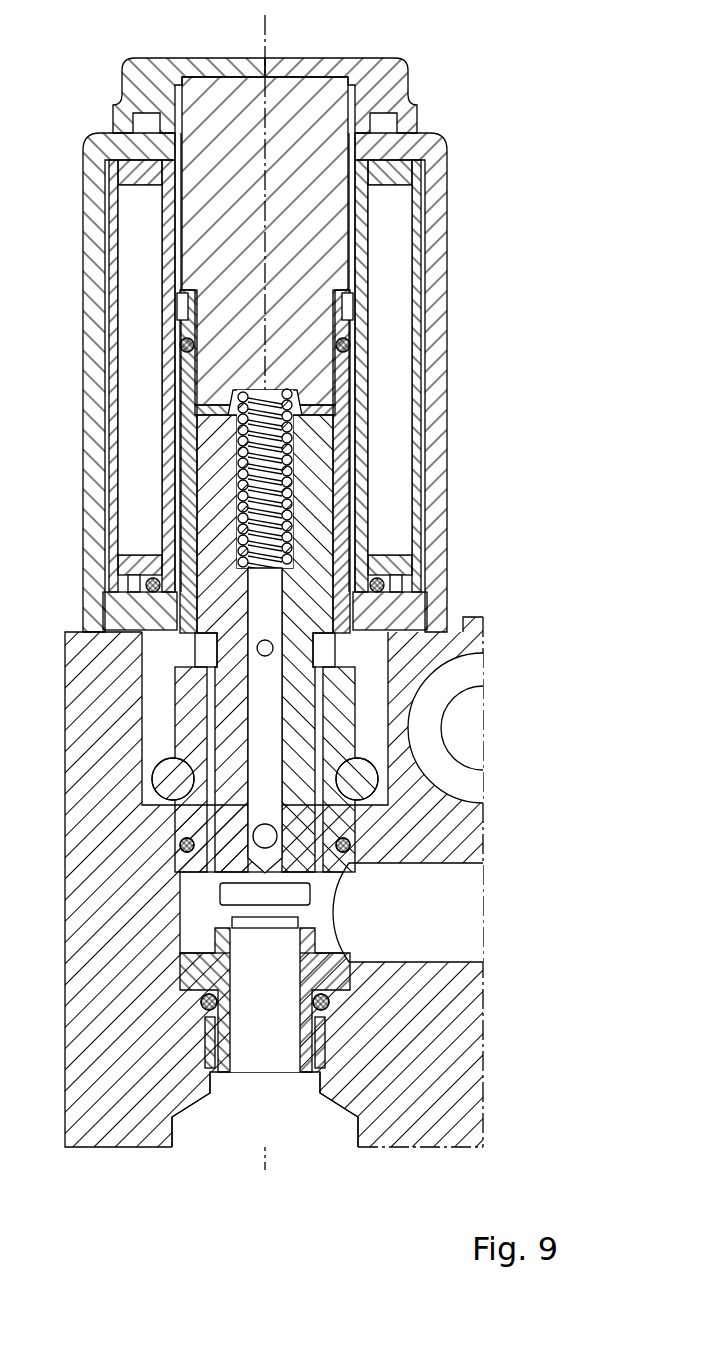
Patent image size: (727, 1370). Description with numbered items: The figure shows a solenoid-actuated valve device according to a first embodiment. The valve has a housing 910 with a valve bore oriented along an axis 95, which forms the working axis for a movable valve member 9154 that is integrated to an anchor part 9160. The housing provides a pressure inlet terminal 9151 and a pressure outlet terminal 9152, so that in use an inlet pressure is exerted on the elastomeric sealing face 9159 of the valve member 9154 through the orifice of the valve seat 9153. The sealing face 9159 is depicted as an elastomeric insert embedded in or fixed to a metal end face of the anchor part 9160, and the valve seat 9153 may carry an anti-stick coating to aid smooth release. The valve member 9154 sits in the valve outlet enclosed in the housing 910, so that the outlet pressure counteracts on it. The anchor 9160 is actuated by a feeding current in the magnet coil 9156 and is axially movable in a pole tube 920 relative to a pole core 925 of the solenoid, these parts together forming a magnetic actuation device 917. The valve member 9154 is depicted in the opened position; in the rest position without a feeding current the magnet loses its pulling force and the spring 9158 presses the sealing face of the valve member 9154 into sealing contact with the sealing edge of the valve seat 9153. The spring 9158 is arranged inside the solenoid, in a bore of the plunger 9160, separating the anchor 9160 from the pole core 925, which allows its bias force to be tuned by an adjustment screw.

The axis 95 is at (268, 31).
The magnetic actuation device 917 is at (447, 160).
The pole core 925 is at (321, 215).
The magnet coil 9156 is at (385, 370).
The spring 9158 is at (275, 438).
The pole tube 920 is at (343, 527).
The housing 910 is at (486, 672).
The anchor part 9160 is at (317, 750).
The valve member 9154 is at (296, 830).
The elastomeric sealing face 9159 is at (297, 893).
The pressure outlet terminal 9152 is at (432, 929).
The valve seat 9153 is at (332, 977).
The pressure inlet terminal 9151 is at (305, 1133).